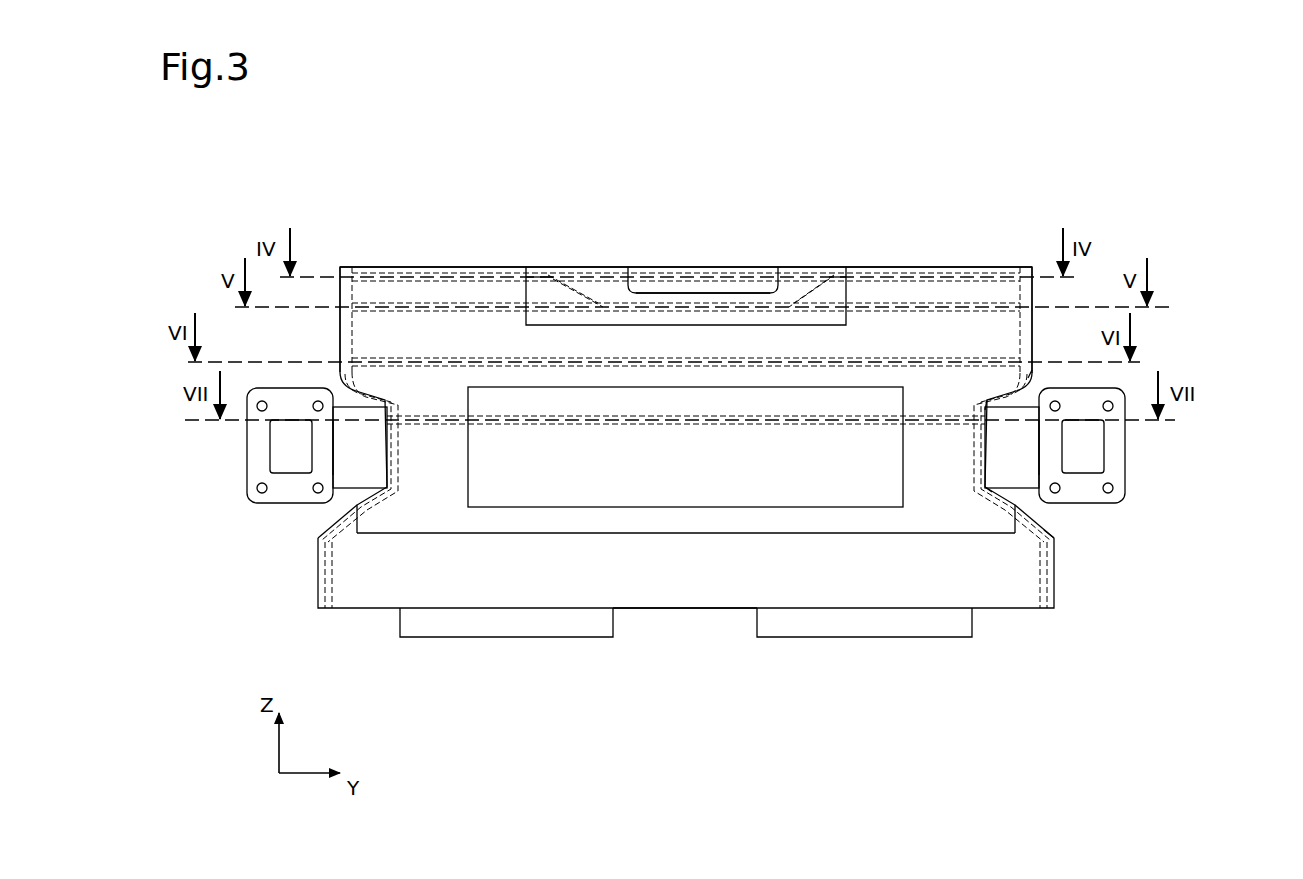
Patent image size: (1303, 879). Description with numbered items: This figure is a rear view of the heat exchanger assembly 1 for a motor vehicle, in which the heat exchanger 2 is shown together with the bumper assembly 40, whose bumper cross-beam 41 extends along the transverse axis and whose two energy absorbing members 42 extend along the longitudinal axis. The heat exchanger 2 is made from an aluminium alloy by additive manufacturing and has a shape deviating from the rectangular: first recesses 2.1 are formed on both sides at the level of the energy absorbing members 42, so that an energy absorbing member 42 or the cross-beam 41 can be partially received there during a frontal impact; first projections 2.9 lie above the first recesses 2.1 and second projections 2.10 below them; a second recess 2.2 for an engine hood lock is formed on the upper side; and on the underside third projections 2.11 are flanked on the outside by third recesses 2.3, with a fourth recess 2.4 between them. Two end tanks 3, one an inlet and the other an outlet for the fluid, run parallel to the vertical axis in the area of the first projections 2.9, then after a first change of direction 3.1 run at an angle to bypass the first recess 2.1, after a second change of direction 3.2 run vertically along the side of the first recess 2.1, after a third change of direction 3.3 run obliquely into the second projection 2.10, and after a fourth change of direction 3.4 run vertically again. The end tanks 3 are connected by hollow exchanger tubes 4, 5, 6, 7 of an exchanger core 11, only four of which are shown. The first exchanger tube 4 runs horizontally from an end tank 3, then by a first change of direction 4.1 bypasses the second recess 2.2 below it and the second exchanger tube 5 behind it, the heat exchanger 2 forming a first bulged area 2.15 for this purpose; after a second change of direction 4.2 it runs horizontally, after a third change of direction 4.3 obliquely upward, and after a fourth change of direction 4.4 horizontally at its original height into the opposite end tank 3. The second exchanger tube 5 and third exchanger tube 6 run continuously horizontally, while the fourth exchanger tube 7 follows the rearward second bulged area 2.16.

The heat exchanger assembly 1 is at (995, 207).
The heat exchanger 2 is at (482, 265).
The end tanks 3 is at (345, 268).
The first exchanger tube 4 is at (385, 278).
The second exchanger tube 5 is at (418, 305).
The third exchanger tube 6 is at (475, 362).
The fourth exchanger tube 7 is at (430, 420).
The exchanger core 11 is at (440, 250).
The first recesses 2.1 is at (348, 465).
The second recess 2.2 is at (703, 268).
The third recesses 2.3 is at (345, 625).
The fourth recess 2.4 is at (690, 645).
The first projections 2.9 is at (333, 338).
The second projections 2.10 is at (300, 553).
The third projections 2.11 is at (478, 648).
The first bulged area 2.15 is at (712, 290).
The second bulged area 2.16 is at (653, 492).
The first change of direction 3.1 is at (1035, 376).
The second change of direction 3.2 is at (985, 405).
The third change of direction 3.3 is at (968, 497).
The fourth change of direction 3.4 is at (1055, 535).
The first change of direction 4.1 is at (560, 272).
The second change of direction 4.2 is at (600, 300).
The third change of direction 4.3 is at (790, 300).
The fourth change of direction 4.4 is at (830, 272).
The bumper assembly 40 is at (1125, 385).
The bumper cross-beam 41 is at (370, 459).
The energy absorbing members 42 is at (275, 452).